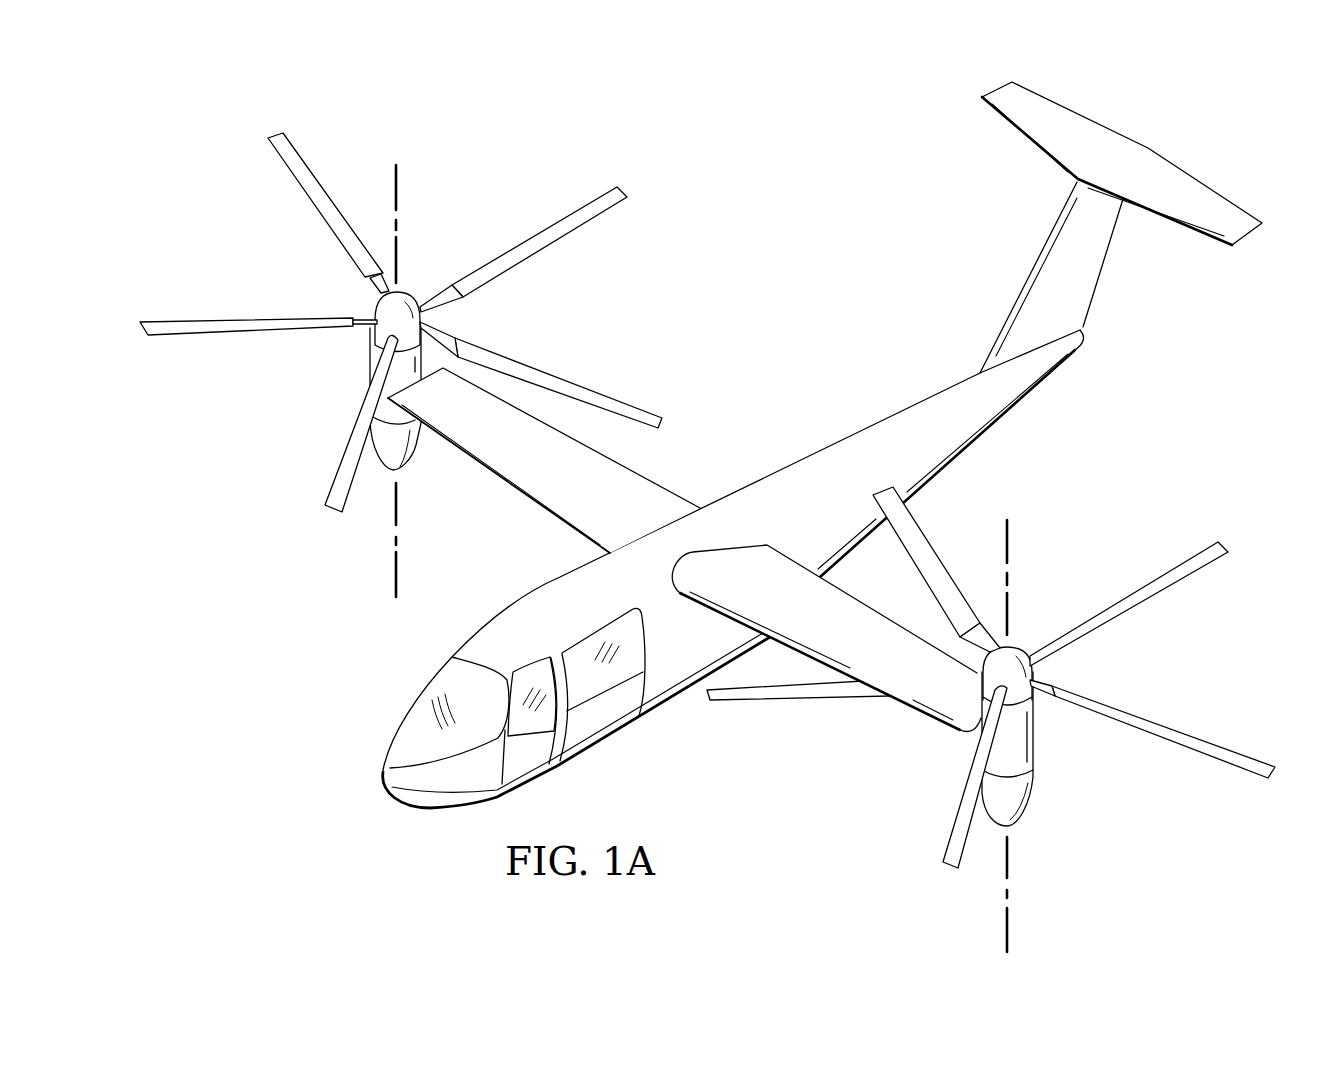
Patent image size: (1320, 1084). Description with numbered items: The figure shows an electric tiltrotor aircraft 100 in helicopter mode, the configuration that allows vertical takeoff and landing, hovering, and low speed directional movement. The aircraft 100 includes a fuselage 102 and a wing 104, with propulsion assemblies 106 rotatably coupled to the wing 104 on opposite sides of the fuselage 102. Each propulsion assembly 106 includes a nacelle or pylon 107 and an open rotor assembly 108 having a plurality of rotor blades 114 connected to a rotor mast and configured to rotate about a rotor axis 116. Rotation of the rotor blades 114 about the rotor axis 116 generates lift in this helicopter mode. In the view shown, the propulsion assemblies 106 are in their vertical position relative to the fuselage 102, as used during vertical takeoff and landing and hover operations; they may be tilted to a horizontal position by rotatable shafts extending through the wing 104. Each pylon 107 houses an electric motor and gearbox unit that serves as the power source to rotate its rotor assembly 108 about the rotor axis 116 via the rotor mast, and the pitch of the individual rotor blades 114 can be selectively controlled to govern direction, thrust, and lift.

The electric tiltrotor aircraft 100 is at (172, 100).
The fuselage 102 is at (810, 452).
The wing 104 is at (661, 503).
The propulsion assembly 106 is at (368, 512).
The nacelle or pylon 107 is at (417, 453).
The open rotor assembly 108 is at (352, 297).
The rotor blade 114 is at (195, 318).
The rotor axis 116 is at (397, 185).